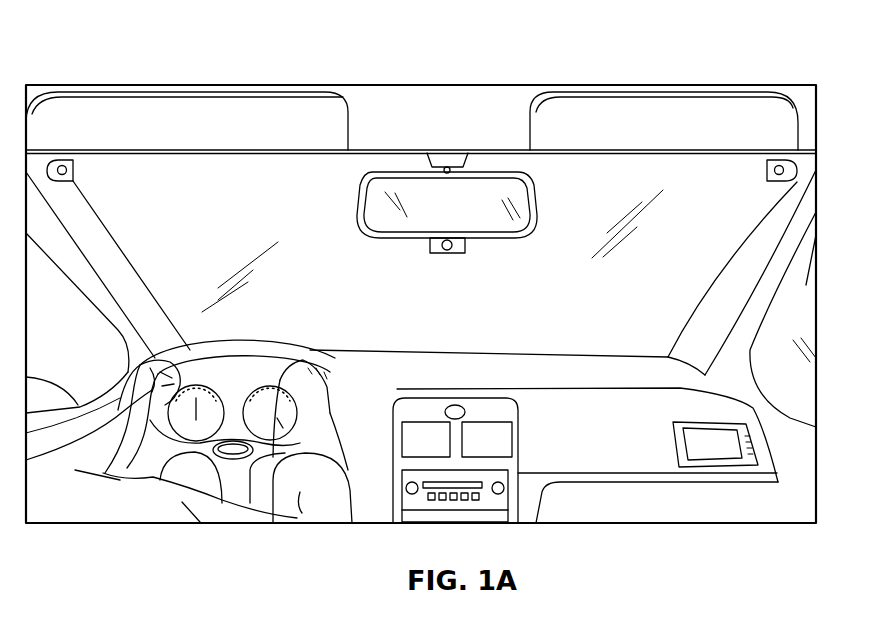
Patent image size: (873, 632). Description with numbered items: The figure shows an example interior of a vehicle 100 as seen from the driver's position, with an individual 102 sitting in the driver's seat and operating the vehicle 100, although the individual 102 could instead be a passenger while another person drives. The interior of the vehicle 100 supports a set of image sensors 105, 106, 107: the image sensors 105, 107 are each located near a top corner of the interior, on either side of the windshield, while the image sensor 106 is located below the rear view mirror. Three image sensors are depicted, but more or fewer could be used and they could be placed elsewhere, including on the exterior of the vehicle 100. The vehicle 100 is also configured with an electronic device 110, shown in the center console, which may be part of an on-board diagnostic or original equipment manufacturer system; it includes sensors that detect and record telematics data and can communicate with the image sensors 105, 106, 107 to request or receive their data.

The vehicle 100 is at (498, 50).
The individual 102 is at (87, 506).
The image sensor 105 is at (74, 167).
The image sensor 106 is at (447, 253).
The image sensor 107 is at (767, 170).
The electronic device 110 is at (487, 408).